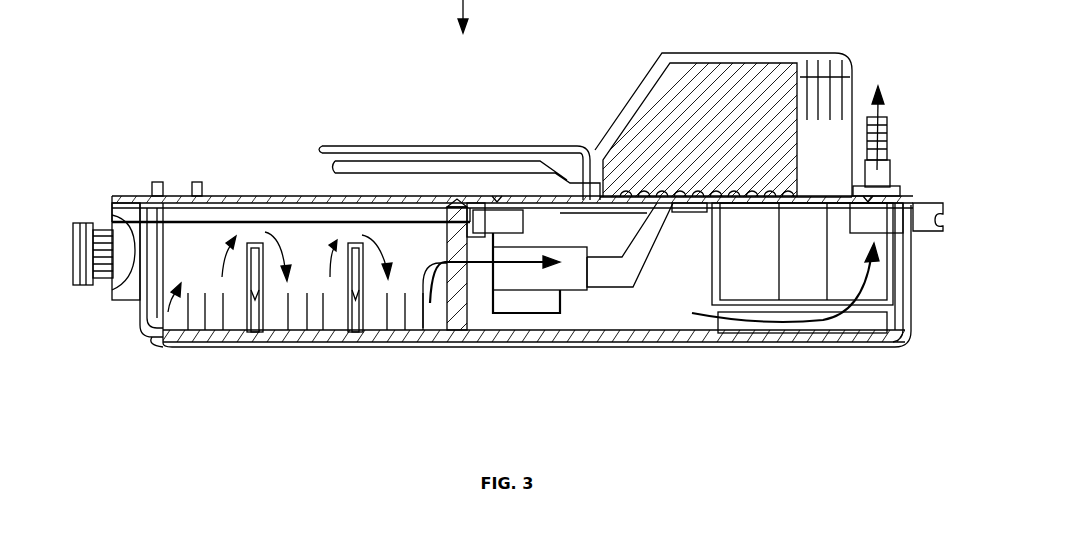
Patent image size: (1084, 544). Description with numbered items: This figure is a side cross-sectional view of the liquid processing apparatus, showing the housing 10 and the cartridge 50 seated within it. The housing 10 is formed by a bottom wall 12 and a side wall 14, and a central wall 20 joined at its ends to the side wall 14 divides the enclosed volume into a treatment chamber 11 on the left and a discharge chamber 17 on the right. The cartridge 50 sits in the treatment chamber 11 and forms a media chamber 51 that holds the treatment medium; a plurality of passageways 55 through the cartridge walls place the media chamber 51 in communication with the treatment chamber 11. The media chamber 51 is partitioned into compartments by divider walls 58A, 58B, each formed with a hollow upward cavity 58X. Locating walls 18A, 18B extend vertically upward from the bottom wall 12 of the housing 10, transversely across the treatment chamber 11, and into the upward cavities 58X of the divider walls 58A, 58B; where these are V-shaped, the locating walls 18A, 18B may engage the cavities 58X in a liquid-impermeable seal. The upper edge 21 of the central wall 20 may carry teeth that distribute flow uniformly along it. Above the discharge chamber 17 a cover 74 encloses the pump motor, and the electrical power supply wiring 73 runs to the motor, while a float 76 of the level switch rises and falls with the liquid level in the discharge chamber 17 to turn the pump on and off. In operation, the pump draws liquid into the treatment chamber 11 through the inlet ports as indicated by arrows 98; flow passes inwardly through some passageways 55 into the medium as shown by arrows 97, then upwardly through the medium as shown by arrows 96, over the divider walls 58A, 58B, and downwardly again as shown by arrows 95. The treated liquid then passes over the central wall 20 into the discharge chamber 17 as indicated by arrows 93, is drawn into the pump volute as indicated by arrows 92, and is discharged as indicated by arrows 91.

The housing 10 is at (798, 362).
The treatment chamber 11 is at (213, 207).
The bottom wall 12 is at (833, 349).
The side wall 14 is at (913, 298).
The discharge chamber 17 is at (668, 318).
The locating wall 18A is at (257, 322).
The locating wall 18B is at (356, 322).
The central wall 20 is at (462, 317).
The upper edge 21 is at (460, 237).
The cartridge 50 is at (143, 309).
The media chamber 51 is at (318, 233).
The passageways 55 is at (185, 323).
The divider wall 58A is at (240, 283).
The divider wall 58B is at (340, 283).
The hollow upward cavity 58X is at (253, 272).
The electrical power supply wiring 73 is at (322, 168).
The cover 74 is at (737, 52).
The float 76 is at (377, 146).
The arrows 91 is at (882, 112).
The arrows 92 is at (707, 313).
The arrows 93 is at (513, 265).
The arrows 95 is at (282, 241).
The arrows 96 is at (221, 267).
The arrows 97 is at (160, 342).
The arrows 98 is at (155, 272).